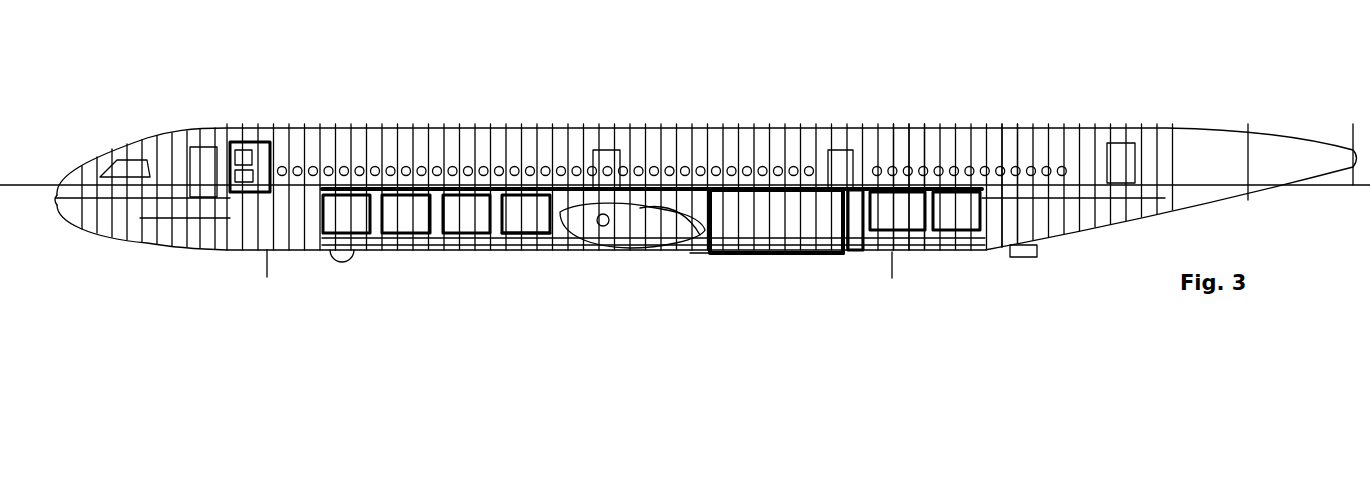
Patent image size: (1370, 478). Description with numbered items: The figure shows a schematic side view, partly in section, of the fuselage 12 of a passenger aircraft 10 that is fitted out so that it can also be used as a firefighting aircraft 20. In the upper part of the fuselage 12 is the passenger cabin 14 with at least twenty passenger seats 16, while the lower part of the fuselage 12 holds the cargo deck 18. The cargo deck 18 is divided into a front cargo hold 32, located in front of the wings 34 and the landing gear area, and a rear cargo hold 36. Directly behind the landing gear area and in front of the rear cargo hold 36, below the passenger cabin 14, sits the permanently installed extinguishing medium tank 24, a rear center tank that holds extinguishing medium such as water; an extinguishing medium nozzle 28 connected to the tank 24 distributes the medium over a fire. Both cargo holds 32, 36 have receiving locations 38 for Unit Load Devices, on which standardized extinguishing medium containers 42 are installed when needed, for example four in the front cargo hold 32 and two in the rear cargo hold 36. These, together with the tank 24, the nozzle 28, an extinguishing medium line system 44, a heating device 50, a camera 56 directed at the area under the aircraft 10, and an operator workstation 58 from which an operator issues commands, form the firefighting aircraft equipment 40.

The passenger aircraft 10 is at (165, 275).
The fuselage 12 is at (425, 125).
The passenger cabin 14 is at (972, 140).
The passenger seats 16 is at (925, 142).
The cargo deck 18 is at (1058, 238).
The firefighting aircraft 20 is at (175, 315).
The extinguishing medium tank 24 is at (772, 250).
The extinguishing medium nozzle 28 is at (851, 256).
The front cargo hold 32 is at (525, 254).
The wings 34 is at (650, 186).
The rear cargo hold 36 is at (905, 280).
The receiving locations 38 is at (520, 172).
The firefighting aircraft equipment 40 is at (800, 250).
The extinguishing medium containers 42 is at (968, 240).
The extinguishing medium line system 44 is at (595, 126).
The heating device 50 is at (700, 243).
The camera 56 is at (330, 264).
The operator workstation 58 is at (243, 136).